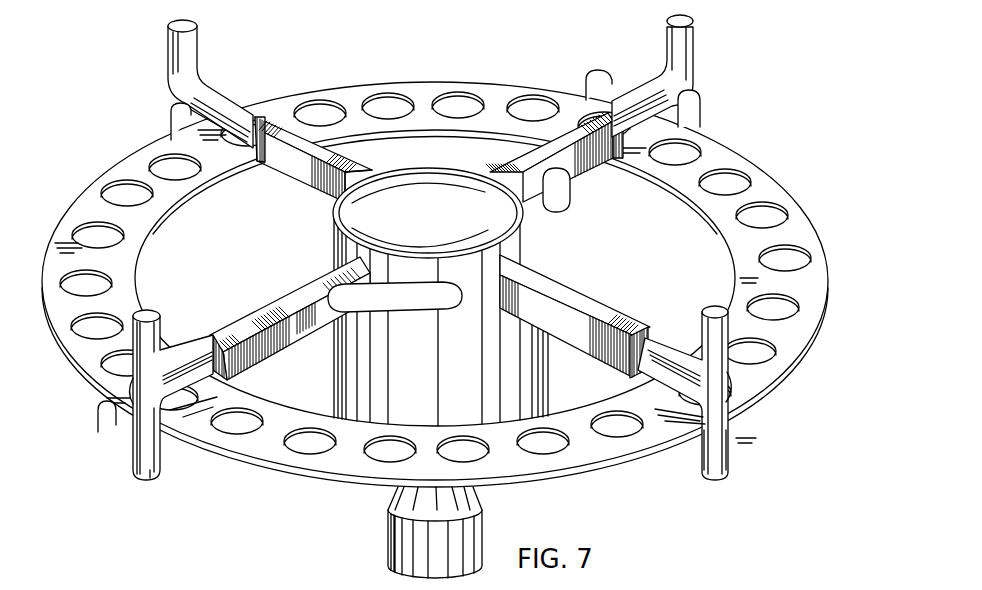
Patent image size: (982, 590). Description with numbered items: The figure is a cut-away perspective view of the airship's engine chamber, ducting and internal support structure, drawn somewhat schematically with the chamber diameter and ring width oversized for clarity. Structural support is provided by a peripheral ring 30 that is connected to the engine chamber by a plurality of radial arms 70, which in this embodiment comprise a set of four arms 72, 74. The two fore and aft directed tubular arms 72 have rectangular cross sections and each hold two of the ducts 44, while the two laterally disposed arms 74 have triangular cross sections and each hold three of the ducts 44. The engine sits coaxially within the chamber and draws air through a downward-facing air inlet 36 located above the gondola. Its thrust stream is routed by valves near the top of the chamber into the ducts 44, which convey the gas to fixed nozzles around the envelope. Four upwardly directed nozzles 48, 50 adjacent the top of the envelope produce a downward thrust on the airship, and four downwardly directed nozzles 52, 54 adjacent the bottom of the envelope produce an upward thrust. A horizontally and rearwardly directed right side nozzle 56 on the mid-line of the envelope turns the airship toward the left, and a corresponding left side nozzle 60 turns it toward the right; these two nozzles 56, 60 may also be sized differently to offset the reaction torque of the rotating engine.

The peripheral ring 30 is at (442, 80).
The air inlet 36 is at (437, 545).
The ducts 44 is at (416, 234).
The upwardly directed nozzle 48 is at (187, 52).
The upwardly directed nozzle 50 is at (727, 363).
The downwardly directed nozzle 52 is at (173, 118).
The downwardly directed nozzle 54 is at (725, 448).
The right side nozzle 56 is at (112, 418).
The left side nozzle 60 is at (615, 88).
The radial arms 70 is at (416, 211).
The fore and aft directed tubular arms 72 is at (292, 143).
The laterally disposed arms 74 is at (220, 319).